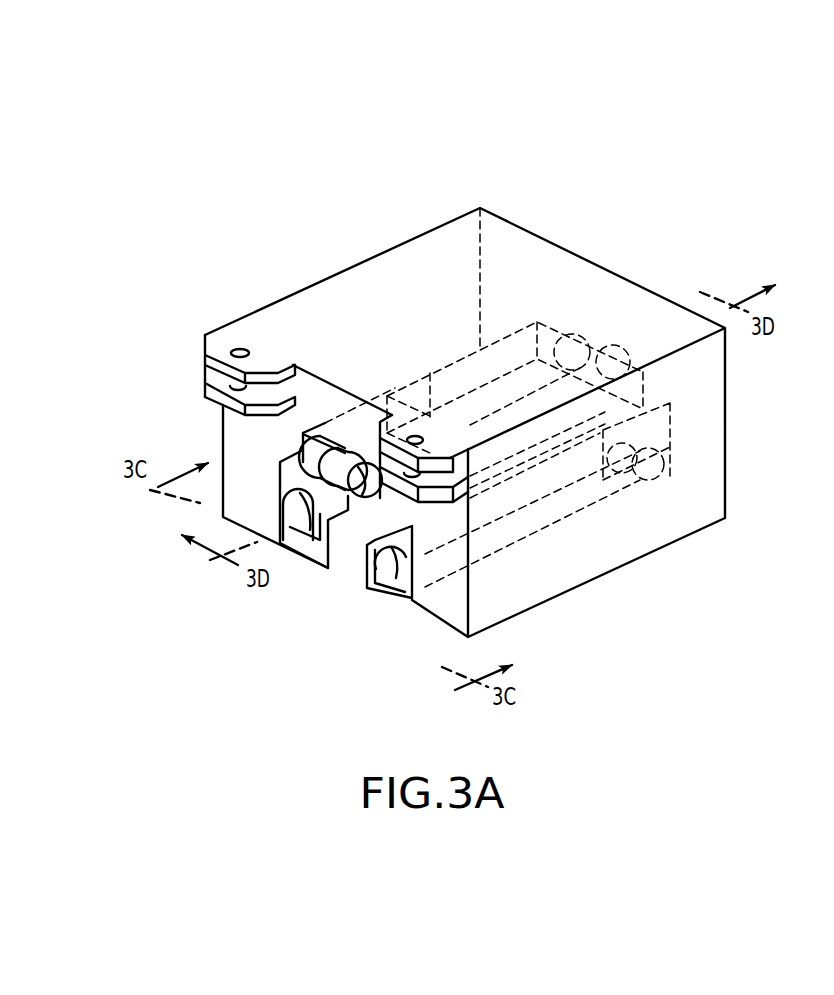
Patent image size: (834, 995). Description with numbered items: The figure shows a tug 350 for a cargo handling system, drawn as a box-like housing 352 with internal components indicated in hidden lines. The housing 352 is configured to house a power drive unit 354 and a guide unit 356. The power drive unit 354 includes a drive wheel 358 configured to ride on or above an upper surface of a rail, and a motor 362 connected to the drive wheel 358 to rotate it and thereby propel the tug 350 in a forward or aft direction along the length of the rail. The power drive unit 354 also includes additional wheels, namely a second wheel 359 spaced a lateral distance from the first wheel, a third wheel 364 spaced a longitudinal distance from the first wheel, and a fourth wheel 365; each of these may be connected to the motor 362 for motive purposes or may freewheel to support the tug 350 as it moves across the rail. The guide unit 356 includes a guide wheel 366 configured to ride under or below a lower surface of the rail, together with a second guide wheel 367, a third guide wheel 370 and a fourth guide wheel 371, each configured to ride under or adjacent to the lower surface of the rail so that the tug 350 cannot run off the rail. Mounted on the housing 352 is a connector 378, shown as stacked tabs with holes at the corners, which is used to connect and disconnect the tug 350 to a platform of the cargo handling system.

The tug 350 is at (348, 167).
The housing 352 is at (493, 208).
The power drive unit 354 is at (360, 382).
The guide unit 356 is at (688, 467).
The drive wheel 358 is at (367, 497).
The second wheel 359 is at (303, 462).
The motor 362 is at (417, 390).
The third wheel 364 is at (610, 353).
The fourth wheel 365 is at (563, 332).
The guide wheel 366 is at (395, 565).
The second guide wheel 367 is at (293, 518).
The third guide wheel 370 is at (645, 475).
The fourth guide wheel 371 is at (552, 425).
The connector 378 is at (176, 357).